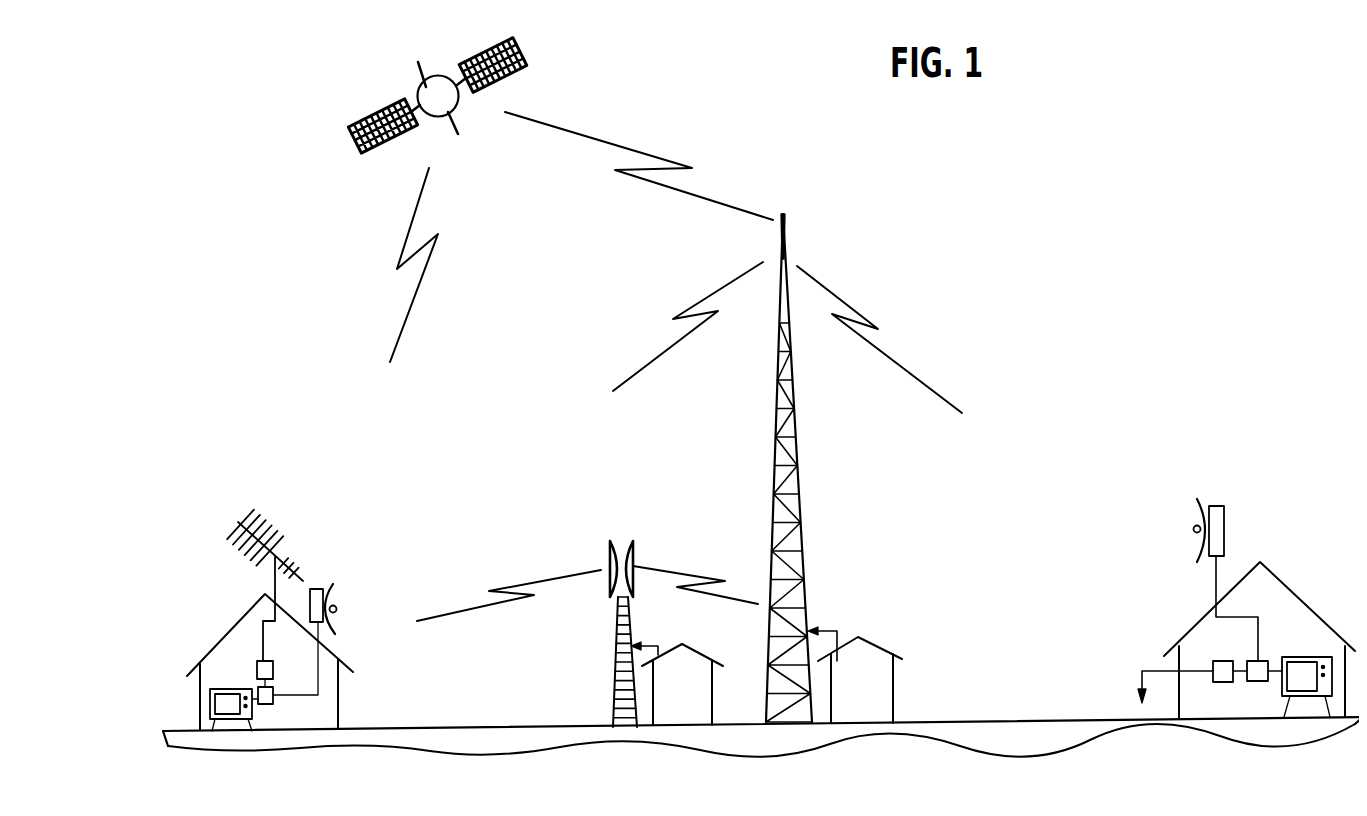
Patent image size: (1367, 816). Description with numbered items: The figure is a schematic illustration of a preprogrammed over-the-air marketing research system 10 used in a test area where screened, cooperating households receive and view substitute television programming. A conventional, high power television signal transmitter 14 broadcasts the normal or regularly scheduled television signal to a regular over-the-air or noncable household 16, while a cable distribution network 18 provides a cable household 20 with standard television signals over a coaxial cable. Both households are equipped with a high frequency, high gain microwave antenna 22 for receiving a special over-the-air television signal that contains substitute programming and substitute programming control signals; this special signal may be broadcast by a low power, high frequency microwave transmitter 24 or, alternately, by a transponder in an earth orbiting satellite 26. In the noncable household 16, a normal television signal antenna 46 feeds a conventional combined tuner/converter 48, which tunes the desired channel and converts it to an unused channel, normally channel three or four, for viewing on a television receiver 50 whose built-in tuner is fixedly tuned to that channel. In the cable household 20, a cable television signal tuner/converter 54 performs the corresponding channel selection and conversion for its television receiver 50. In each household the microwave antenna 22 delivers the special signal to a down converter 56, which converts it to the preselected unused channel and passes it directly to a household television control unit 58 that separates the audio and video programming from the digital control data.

The preprogrammed over-the-air marketing research system 10 is at (1072, 384).
The television signal transmitter 14 is at (793, 438).
The noncable household 16 is at (333, 683).
The cable distribution network 18 is at (1142, 672).
The cable household 20 is at (1280, 597).
The microwave antenna 22 is at (331, 594).
The microwave transmitter 24 is at (618, 665).
The earth orbiting satellite 26 is at (424, 90).
The television signal antenna 46 is at (267, 523).
The tuner/converter 48 is at (273, 663).
The television receiver 50 is at (229, 700).
The cable television signal tuner/converter 54 is at (1222, 683).
The down converter 56 is at (315, 590).
The household television control unit 58 is at (272, 702).